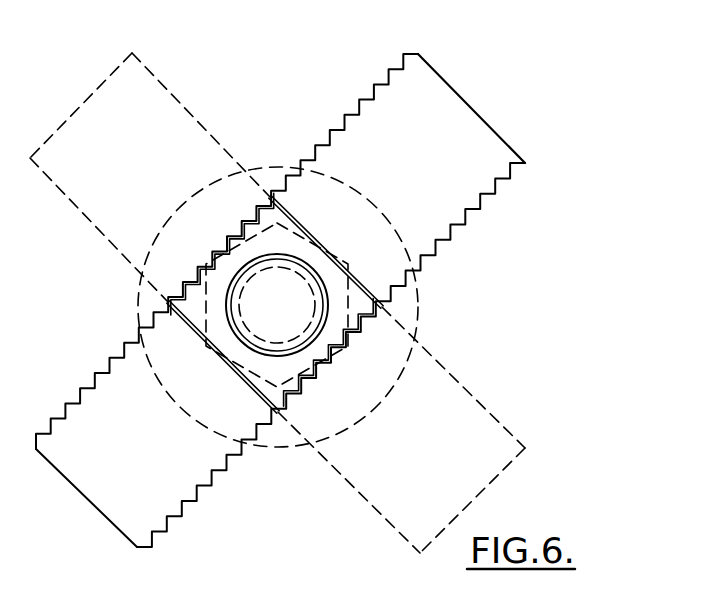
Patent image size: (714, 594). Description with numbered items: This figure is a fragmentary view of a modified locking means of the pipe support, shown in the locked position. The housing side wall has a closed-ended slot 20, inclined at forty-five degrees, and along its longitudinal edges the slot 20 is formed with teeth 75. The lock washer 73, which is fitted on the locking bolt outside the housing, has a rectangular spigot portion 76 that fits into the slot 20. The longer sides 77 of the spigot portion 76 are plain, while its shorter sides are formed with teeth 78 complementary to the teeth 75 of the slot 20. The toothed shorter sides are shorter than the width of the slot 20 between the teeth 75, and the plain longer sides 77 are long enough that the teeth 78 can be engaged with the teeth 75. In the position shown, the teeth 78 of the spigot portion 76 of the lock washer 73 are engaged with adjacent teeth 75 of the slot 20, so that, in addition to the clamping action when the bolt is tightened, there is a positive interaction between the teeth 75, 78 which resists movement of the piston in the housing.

The slot 20 is at (286, 303).
The lock washer 73 is at (416, 321).
The teeth 75 is at (472, 205).
The spigot portion 76 is at (336, 302).
The plain longer sides 77 is at (320, 255).
The teeth 78 is at (243, 228).